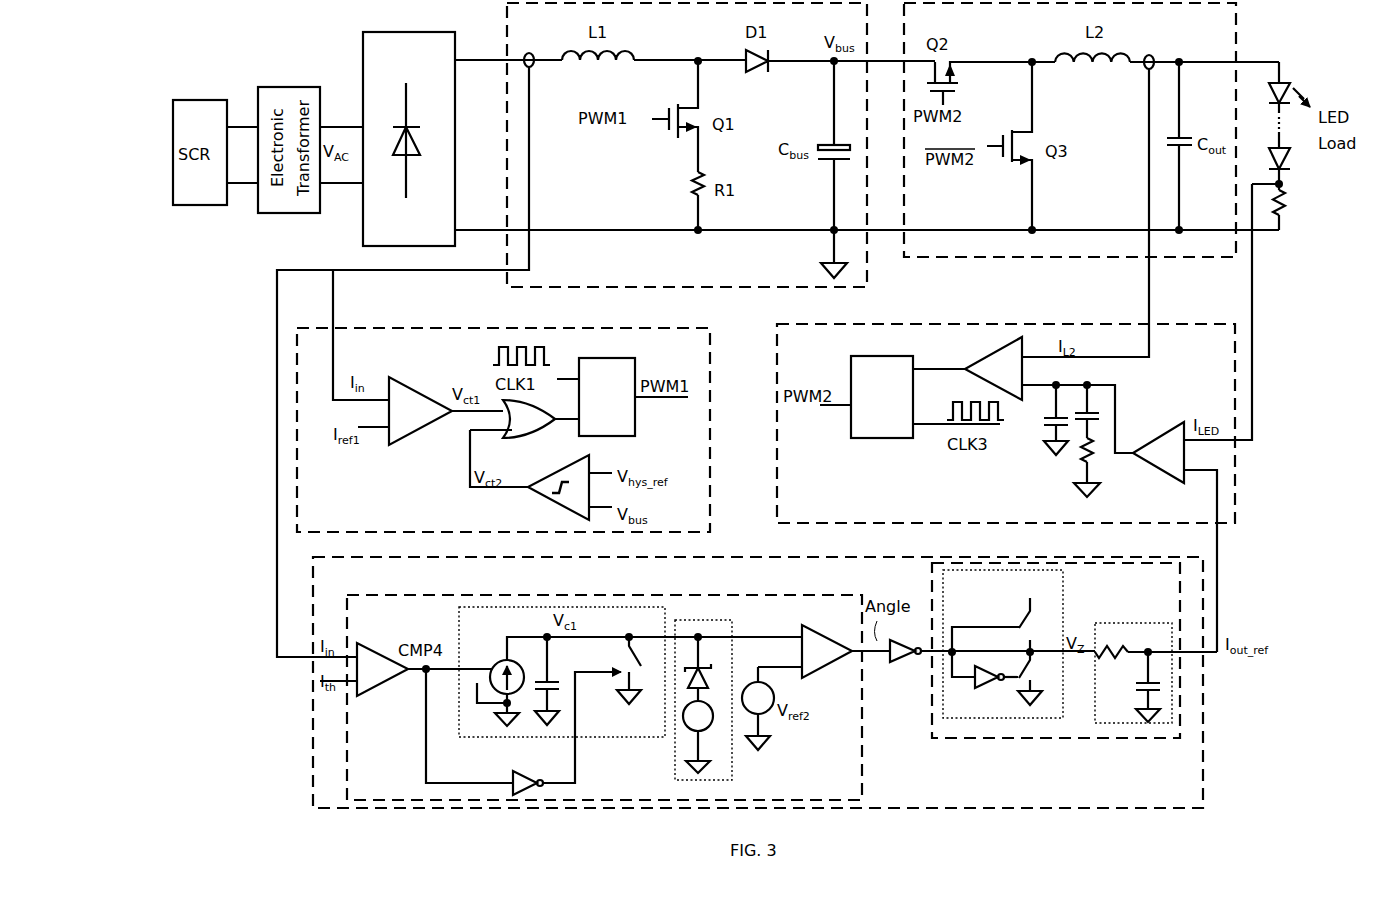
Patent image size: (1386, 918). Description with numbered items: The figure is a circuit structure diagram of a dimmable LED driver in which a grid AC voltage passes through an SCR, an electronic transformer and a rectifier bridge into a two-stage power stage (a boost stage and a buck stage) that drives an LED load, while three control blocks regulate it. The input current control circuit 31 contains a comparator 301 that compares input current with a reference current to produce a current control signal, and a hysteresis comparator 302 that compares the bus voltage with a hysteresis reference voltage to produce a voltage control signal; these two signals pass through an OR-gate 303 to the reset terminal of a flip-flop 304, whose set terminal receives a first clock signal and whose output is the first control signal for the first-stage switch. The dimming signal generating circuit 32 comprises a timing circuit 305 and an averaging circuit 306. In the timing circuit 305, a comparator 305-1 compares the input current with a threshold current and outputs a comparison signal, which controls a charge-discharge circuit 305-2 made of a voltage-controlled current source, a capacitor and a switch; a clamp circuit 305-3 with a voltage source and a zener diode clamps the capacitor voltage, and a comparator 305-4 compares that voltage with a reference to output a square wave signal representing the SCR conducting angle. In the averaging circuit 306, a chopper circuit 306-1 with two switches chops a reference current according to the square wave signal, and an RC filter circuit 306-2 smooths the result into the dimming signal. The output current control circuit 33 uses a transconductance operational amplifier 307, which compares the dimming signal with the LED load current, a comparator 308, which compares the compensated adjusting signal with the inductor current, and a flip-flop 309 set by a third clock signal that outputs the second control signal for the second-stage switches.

The input current control circuit 31 is at (503, 431).
The dimming signal generating circuit 32 is at (758, 682).
The output current control circuit 33 is at (1006, 426).
The comparator 301 is at (420, 398).
The hysteresis comparator 302 is at (545, 498).
The OR-gate 303 is at (542, 430).
The flip-flop 304 is at (636, 424).
The timing circuit 305 is at (604, 697).
The comparator 305-1 is at (390, 675).
The charge-discharge circuit 305-2 is at (612, 745).
The clamp circuit 305-3 is at (735, 762).
The comparator 305-4 is at (837, 668).
The averaging circuit 306 is at (1133, 740).
The chopper circuit 306-1 is at (1085, 598).
The RC filter circuit 306-2 is at (1100, 626).
The transconductance operational amplifier 307 is at (1166, 478).
The comparator 308 is at (988, 372).
The flip-flop 309 is at (910, 397).